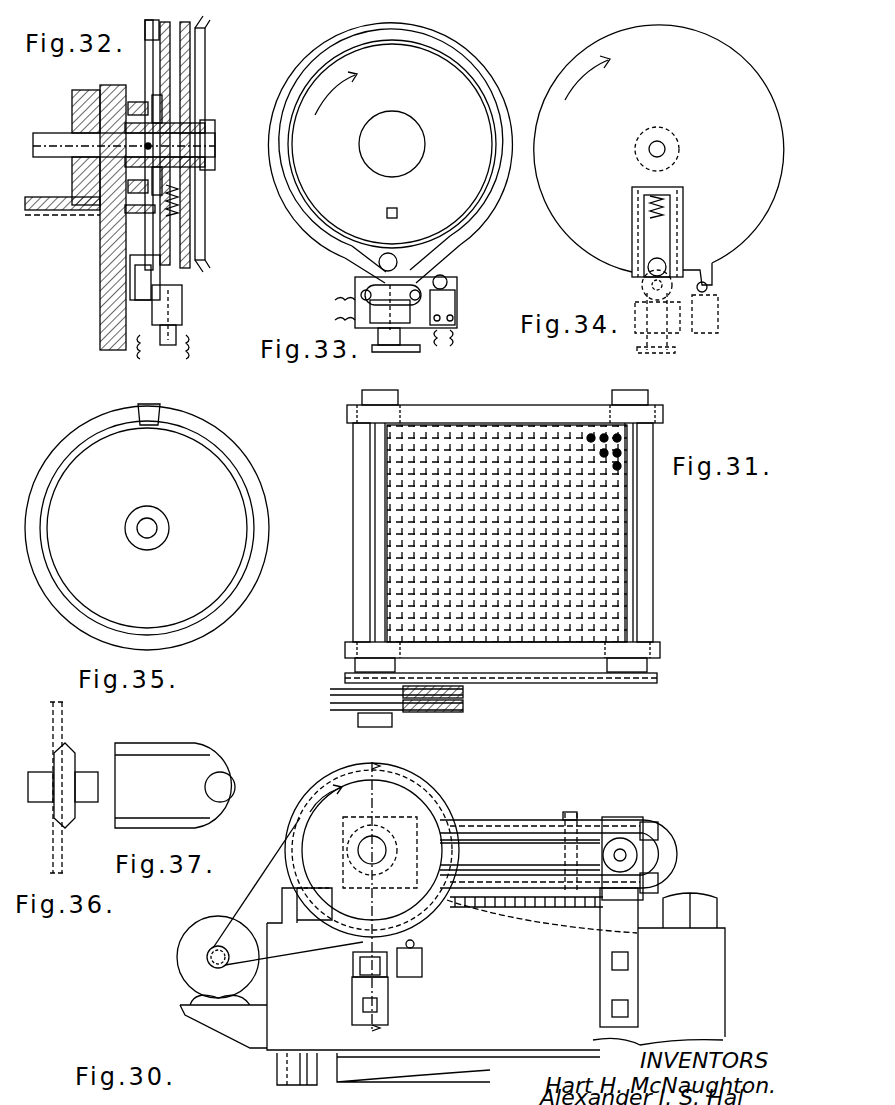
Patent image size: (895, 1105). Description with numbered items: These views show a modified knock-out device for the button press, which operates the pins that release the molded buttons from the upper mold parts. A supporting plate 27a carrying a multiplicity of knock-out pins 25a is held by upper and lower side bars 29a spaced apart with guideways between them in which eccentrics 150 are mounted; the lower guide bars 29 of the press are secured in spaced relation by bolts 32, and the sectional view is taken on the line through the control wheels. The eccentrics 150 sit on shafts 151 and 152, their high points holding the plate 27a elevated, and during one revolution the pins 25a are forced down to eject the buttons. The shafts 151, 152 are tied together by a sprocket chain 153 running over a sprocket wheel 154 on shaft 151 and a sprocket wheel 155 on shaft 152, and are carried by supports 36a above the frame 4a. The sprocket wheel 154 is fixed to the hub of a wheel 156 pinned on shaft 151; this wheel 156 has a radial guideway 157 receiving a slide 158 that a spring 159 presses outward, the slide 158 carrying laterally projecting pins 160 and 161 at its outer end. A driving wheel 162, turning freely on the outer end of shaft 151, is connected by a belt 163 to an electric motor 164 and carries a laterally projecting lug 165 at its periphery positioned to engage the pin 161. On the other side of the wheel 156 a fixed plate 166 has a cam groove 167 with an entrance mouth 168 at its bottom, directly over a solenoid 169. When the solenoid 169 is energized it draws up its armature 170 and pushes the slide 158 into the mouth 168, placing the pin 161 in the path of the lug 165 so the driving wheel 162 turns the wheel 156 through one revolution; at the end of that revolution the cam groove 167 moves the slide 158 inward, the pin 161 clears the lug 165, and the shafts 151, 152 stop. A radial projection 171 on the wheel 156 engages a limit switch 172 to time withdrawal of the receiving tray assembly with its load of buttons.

In FIG. 31, the lower guide bars 29 is at (660, 645).
In FIG. 32, the upper and lower side bars 29a is at (100, 110).
In FIG. 31, the upper and lower side bars 29a is at (555, 398).
In FIG. 30, the upper and lower side bars 29a is at (658, 830).
In FIG. 31, the knock-out pins 25a is at (620, 455).
In FIG. 32, the supporting plate 27a is at (46, 214).
In FIG. 31, the supporting plate 27a is at (612, 560).
In FIG. 30, the supporting plate 27a is at (545, 905).
In FIG. 32, the supports 36a is at (100, 260).
In FIG. 30, the supports 36a is at (388, 1000).
In FIG. 30, the frame 4a is at (390, 986).
In FIG. 30, the bolts 32 is at (369, 896).
In FIG. 32, the eccentrics 150 is at (86, 125).
In FIG. 30, the eccentrics 150 is at (645, 822).
In FIG. 32, the shaft 151 is at (52, 150).
In FIG. 31, the shaft 151 is at (372, 556).
In FIG. 30, the shaft 151 is at (370, 835).
In FIG. 31, the shaft 152 is at (630, 586).
In FIG. 30, the shaft 152 is at (626, 855).
In FIG. 32, the sprocket chain 153 is at (147, 100).
In FIG. 31, the sprocket chain 153 is at (515, 685).
In FIG. 30, the sprocket chain 153 is at (515, 822).
In FIG. 32, the sprocket wheel 154 is at (158, 110).
In FIG. 30, the sprocket wheel 154 is at (450, 805).
In FIG. 30, the sprocket wheel 155 is at (605, 830).
In FIG. 32, the wheel 156 is at (197, 57).
In FIG. 34, the wheel 156 is at (745, 75).
In FIG. 31, the wheel 156 is at (330, 692).
In FIG. 36, the wheel 156 is at (62, 708).
In FIG. 34, the radial guideway 157 is at (684, 208).
In FIG. 36, the radial guideway 157 is at (70, 745).
In FIG. 34, the slide 158 is at (655, 226).
In FIG. 37, the slide 158 is at (188, 757).
In FIG. 32, the spring 159 is at (173, 195).
In FIG. 34, the spring 159 is at (680, 190).
In FIG. 36, the laterally projecting pin 160 is at (38, 805).
In FIG. 32, the laterally projecting pin 161 is at (177, 263).
In FIG. 34, the laterally projecting pin 161 is at (663, 261).
In FIG. 36, the laterally projecting pin 161 is at (90, 805).
In FIG. 37, the laterally projecting pin 161 is at (228, 779).
In FIG. 32, the driving wheel 162 is at (187, 77).
In FIG. 35, the driving wheel 162 is at (228, 466).
In FIG. 31, the driving wheel 162 is at (358, 718).
In FIG. 30, the driving wheel 162 is at (300, 826).
In FIG. 30, the belt 163 is at (245, 905).
In FIG. 30, the electric motor 164 is at (180, 950).
In FIG. 32, the laterally projecting lug 165 is at (147, 30).
In FIG. 35, the laterally projecting lug 165 is at (165, 410).
In FIG. 32, the fixed plate 166 is at (152, 235).
In FIG. 33, the fixed plate 166 is at (450, 78).
In FIG. 31, the fixed plate 166 is at (345, 688).
In FIG. 32, the cam groove 167 is at (187, 63).
In FIG. 33, the cam groove 167 is at (315, 45).
In FIG. 33, the entrance mouth 168 is at (358, 280).
In FIG. 32, the solenoid 169 is at (177, 307).
In FIG. 33, the solenoid 169 is at (385, 335).
In FIG. 34, the solenoid 169 is at (637, 330).
In FIG. 30, the solenoid 169 is at (353, 970).
In FIG. 33, the armature 170 is at (450, 352).
In FIG. 34, the armature 170 is at (680, 352).
In FIG. 34, the radial projection 171 is at (712, 278).
In FIG. 34, the limit switch 172 is at (718, 322).
In FIG. 30, the limit switch 172 is at (422, 965).